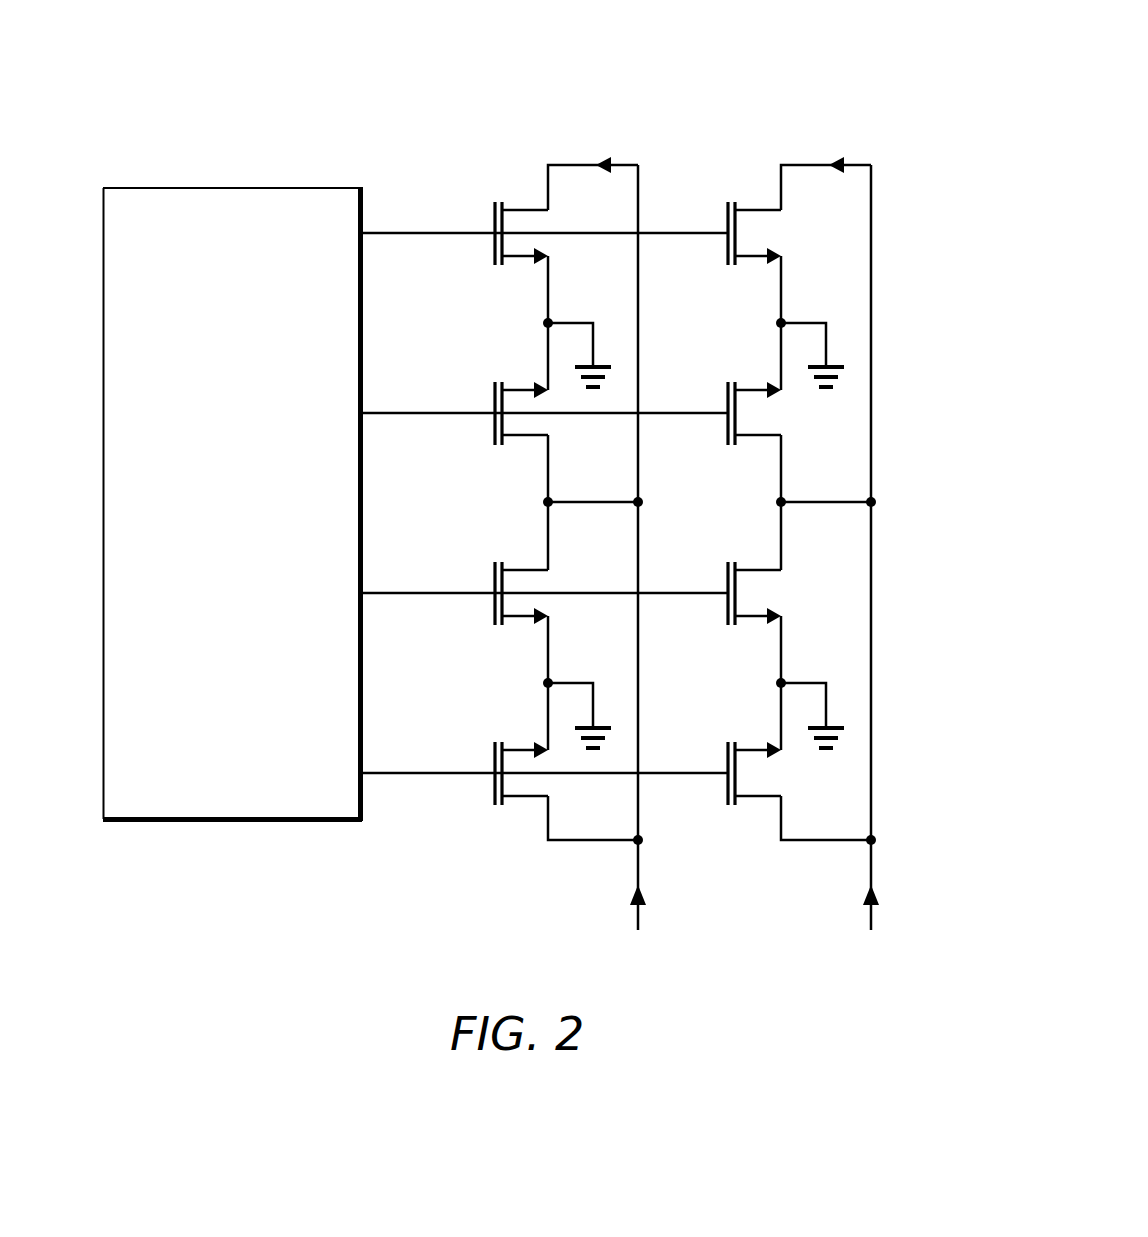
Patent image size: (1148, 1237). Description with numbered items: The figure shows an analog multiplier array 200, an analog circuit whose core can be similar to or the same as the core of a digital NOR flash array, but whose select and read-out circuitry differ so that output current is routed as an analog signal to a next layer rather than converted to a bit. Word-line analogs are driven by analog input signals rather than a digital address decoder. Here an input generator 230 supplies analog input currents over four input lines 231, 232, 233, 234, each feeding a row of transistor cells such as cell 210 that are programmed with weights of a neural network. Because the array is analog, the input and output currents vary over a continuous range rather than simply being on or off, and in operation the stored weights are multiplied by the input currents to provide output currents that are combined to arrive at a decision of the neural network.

The analog multiplier array 200 is at (788, 68).
The transistor cell 210 is at (505, 150).
The input generator 230 is at (205, 838).
The input current line IIn0 231 is at (435, 197).
The input current line IIn1 232 is at (433, 378).
The input current line IIn2 233 is at (433, 558).
The input current line IIn3 234 is at (433, 738).